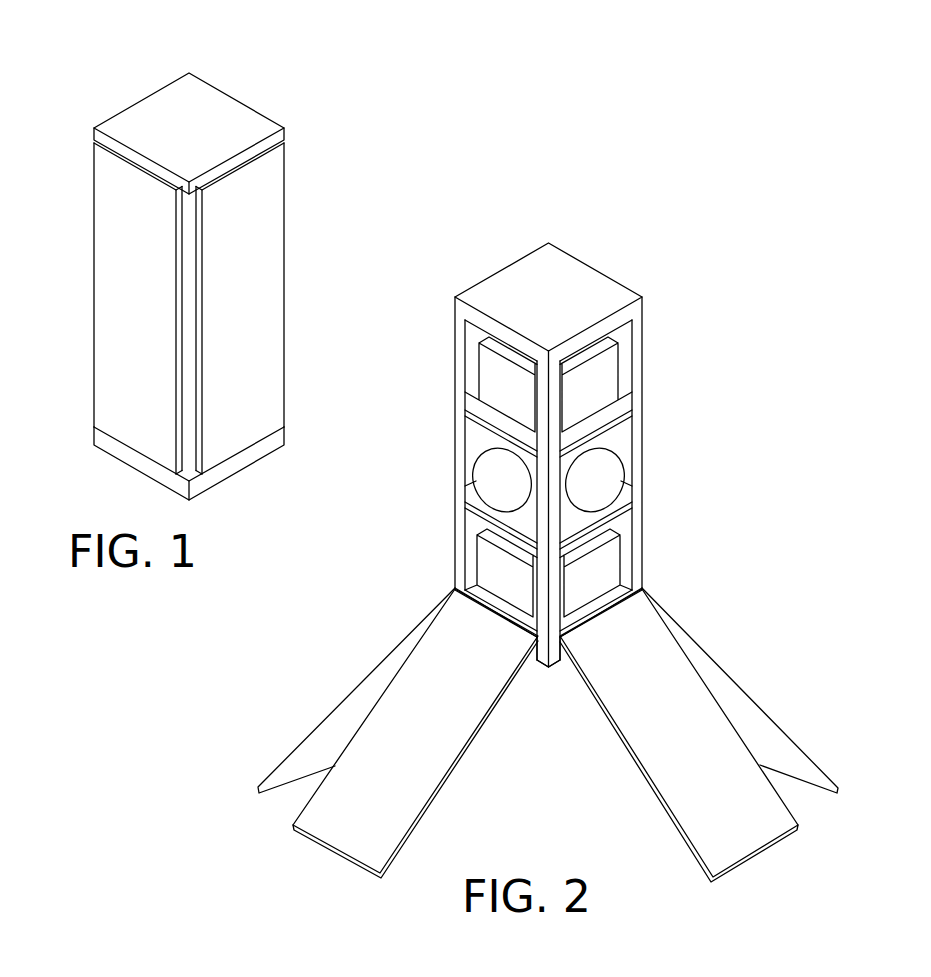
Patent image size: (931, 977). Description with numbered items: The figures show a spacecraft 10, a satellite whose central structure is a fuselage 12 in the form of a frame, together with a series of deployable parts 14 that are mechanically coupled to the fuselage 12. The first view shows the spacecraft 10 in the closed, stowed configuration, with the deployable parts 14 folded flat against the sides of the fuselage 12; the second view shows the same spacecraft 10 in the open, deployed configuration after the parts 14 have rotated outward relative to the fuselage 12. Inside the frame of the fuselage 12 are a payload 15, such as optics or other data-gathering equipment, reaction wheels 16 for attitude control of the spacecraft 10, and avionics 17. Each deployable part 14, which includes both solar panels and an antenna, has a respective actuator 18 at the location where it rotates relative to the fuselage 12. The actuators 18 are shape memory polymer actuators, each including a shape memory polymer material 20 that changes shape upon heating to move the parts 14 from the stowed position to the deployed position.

In FIG. 1, the spacecraft 10 is at (123, 68).
In FIG. 2, the spacecraft 10 is at (440, 285).
In FIG. 1, the fuselage 12 is at (228, 107).
In FIG. 2, the fuselage 12 is at (642, 384).
In FIG. 1, the deployable parts 14 is at (123, 243).
In FIG. 2, the deployable parts 14 is at (382, 662).
In FIG. 2, the payload 15 is at (605, 563).
In FIG. 2, the reaction wheels 16 is at (622, 462).
In FIG. 2, the avionics 17 is at (605, 373).
In FIG. 1, the actuators 18 is at (132, 467).
In FIG. 2, the actuators 18 is at (441, 578).
In FIG. 2, the shape memory polymer material 20 is at (495, 608).